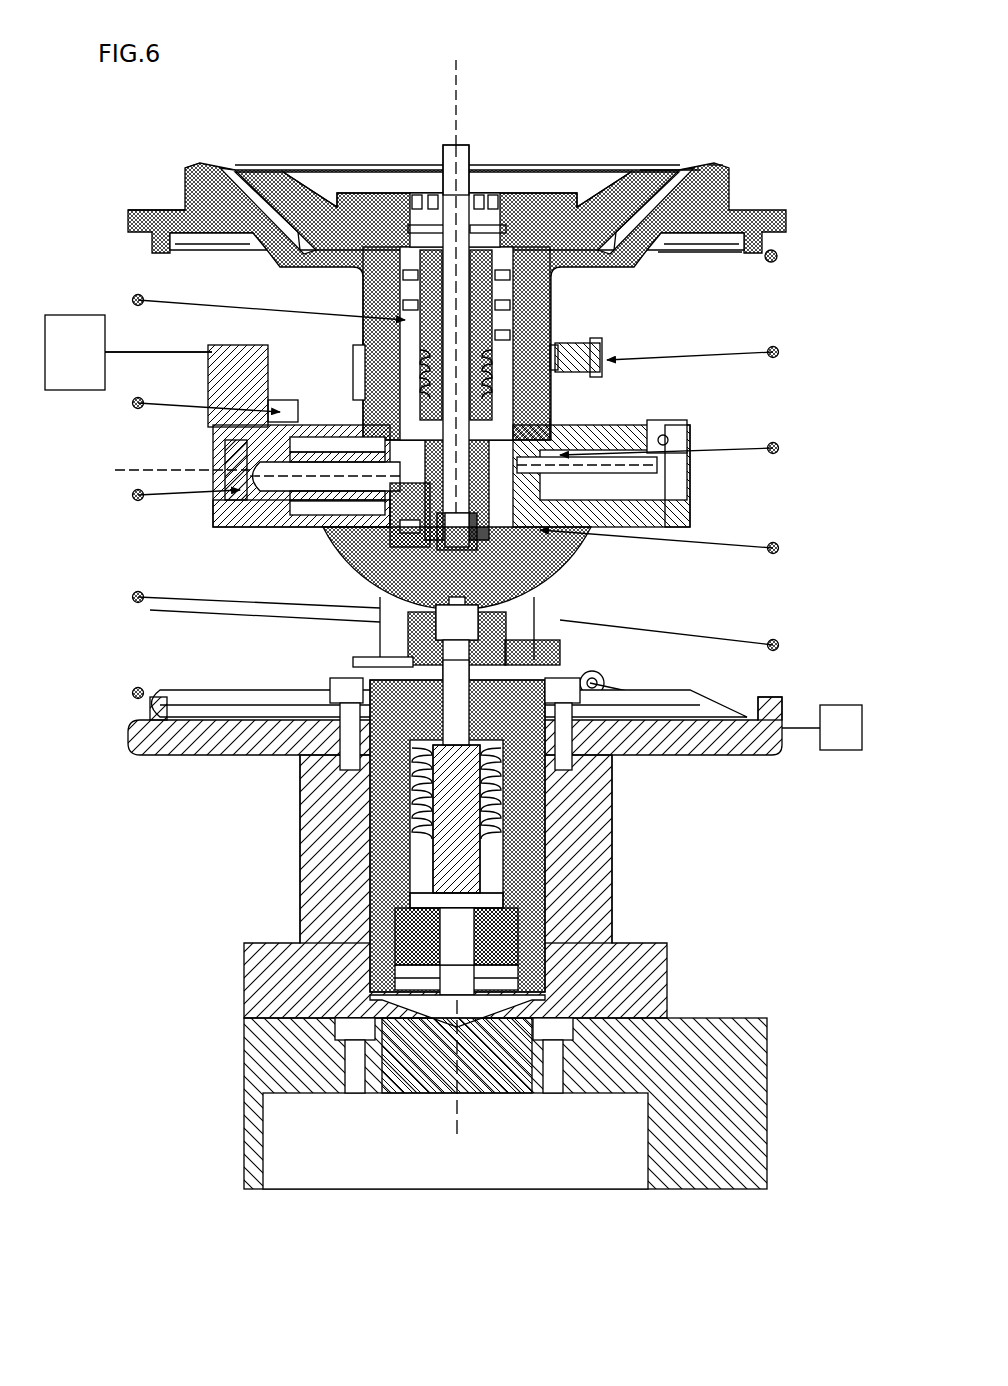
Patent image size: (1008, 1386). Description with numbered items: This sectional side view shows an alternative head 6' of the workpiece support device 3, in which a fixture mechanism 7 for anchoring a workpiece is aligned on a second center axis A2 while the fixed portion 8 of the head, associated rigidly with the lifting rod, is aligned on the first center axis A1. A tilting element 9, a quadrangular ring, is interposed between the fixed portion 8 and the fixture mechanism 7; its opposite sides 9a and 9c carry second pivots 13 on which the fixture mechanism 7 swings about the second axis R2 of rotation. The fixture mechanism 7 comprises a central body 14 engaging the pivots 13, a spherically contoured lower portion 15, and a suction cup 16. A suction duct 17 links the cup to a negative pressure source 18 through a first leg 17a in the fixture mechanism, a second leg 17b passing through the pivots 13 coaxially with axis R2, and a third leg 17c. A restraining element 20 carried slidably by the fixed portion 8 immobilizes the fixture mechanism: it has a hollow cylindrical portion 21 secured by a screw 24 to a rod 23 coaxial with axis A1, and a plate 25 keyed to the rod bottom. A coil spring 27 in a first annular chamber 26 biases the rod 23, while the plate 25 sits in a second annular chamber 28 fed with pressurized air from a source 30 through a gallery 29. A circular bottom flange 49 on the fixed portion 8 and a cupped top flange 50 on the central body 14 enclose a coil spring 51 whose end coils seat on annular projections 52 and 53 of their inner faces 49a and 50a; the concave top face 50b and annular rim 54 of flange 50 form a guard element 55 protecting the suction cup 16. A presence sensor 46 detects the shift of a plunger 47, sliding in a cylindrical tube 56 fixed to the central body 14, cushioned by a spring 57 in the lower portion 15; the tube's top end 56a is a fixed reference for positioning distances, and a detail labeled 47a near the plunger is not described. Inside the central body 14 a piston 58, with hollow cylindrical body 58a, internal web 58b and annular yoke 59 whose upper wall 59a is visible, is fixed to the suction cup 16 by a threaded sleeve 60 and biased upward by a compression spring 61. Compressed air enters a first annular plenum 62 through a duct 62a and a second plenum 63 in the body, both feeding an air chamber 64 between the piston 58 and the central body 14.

The device 3 is at (727, 1200).
The head 6' is at (130, 159).
The fixture mechanism 7 is at (560, 382).
The fixed portion 8 is at (298, 905).
The tilting element 9 is at (265, 530).
The side of tilting element 9a is at (700, 445).
The side of tilting element 9c is at (268, 408).
The second pivots 13 is at (290, 498).
The central body 14 is at (352, 363).
The spherically contoured lower portion 15 is at (578, 553).
The suction cup 16 is at (285, 180).
The suction duct 17 is at (247, 478).
The first leg 17a is at (330, 545).
The second leg 17b is at (225, 442).
The third leg 17c is at (120, 350).
The negative pressure source 18 is at (128, 352).
The restraining element 20 is at (540, 607).
The hollow cylindrical portion 21 is at (393, 638).
The rod 23 is at (497, 720).
The screw 24 is at (515, 650).
The plate 25 is at (507, 945).
The first annular chamber 26 is at (507, 787).
The coil spring 27 is at (482, 822).
The second annular chamber 28 is at (527, 906).
The gallery 29 is at (607, 692).
The pressurized fluid source 30 is at (822, 727).
The presence sensor 46 is at (690, 515).
The plunger 47 is at (553, 420).
The ring 47a is at (427, 210).
The first flange 49 is at (126, 740).
The inner face of first flange 49a is at (737, 690).
The second flange 50 is at (781, 208).
The inner face of second flange 50a is at (657, 252).
The top outer face 50b is at (702, 162).
The coil spring 51 is at (763, 632).
The annular projection 52 is at (765, 698).
The annular projection 53 is at (778, 258).
The annular rim 54 is at (733, 163).
The guard element 55 is at (210, 160).
The cylindrical tube 56 is at (442, 150).
The top end of tube 56a is at (463, 150).
The spring 57 is at (390, 605).
The piston 58 is at (407, 320).
The hollow cylindrical body 58a is at (400, 300).
The internal web 58b is at (545, 290).
The annular yoke 59 is at (493, 330).
The upper wall 59a is at (537, 313).
The threaded sleeve 60 is at (424, 213).
The compression spring 61 is at (417, 400).
The first annular air plenum 62 is at (350, 342).
The duct 62a is at (778, 352).
The second annular air plenum 63 is at (481, 195).
The air chamber 64 is at (492, 197).
The first center axis A1 is at (457, 1113).
The second center axis A2 is at (452, 150).
The second axis of rotation R2 is at (115, 470).